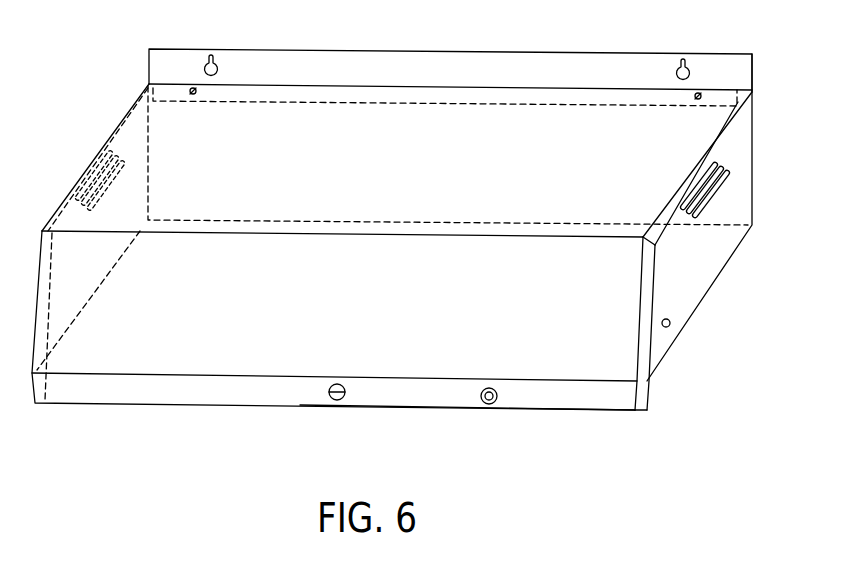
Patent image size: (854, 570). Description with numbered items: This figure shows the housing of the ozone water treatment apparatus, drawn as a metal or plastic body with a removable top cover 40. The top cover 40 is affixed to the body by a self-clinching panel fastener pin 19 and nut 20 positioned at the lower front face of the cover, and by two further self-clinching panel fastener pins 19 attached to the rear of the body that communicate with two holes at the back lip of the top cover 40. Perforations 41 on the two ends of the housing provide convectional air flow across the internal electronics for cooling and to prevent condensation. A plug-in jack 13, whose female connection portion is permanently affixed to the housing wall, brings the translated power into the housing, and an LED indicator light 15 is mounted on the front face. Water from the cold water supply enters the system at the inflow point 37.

The plug-in jack 13 is at (670, 325).
The LED indicator light 15 is at (492, 404).
The self-clinching panel fastener pin 19 is at (193, 88).
The nut 20 is at (337, 400).
The inflow point 37 is at (752, 142).
The top cover 40 is at (625, 412).
The perforations 41 is at (113, 172).